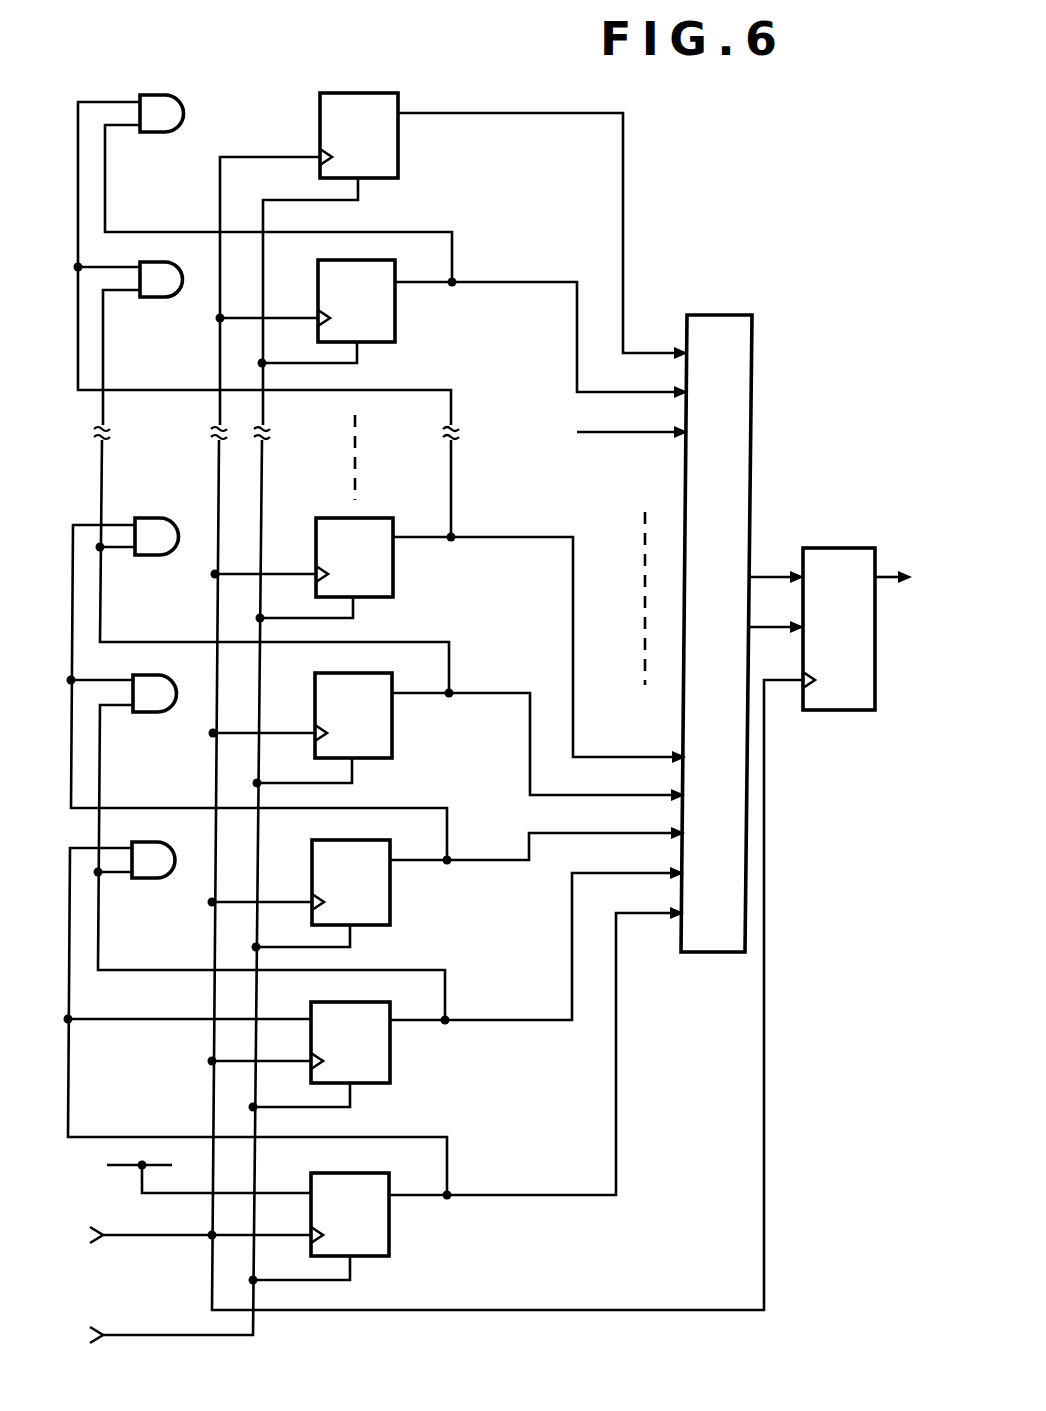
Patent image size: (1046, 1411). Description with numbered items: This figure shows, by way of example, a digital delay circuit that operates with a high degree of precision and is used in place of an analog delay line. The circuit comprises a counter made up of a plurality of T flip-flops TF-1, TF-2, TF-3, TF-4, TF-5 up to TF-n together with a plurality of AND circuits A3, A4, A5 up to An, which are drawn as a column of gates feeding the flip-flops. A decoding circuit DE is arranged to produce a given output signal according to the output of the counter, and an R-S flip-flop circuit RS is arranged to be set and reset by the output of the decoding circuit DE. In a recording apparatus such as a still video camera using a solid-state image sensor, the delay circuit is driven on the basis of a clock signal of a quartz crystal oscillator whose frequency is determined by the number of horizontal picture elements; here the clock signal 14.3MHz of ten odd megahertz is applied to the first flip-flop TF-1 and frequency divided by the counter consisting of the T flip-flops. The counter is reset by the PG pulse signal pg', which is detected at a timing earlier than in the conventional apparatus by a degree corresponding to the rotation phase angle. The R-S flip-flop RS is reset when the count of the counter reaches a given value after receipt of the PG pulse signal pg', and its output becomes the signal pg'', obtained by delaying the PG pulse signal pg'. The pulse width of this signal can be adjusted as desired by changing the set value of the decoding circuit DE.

The AND circuit An is at (160, 95).
The AND circuit A5 is at (155, 518).
The AND circuit A4 is at (150, 712).
The AND circuit A3 is at (150, 878).
The T flip-flop TF-n is at (398, 171).
The T flip-flop TF-5 is at (393, 591).
The T flip-flop TF-4 is at (392, 751).
The T flip-flop TF-3 is at (390, 919).
The T flip-flop TF-2 is at (390, 1078).
The T flip-flop TF-1 is at (389, 1250).
The decoding circuit DE is at (722, 952).
The R-S flip-flop circuit RS is at (855, 710).
The delayed PG pulse signal pg'' is at (903, 557).
The PG pulse signal pg' is at (79, 1340).
The clock signal 14.3MHz is at (181, 1252).